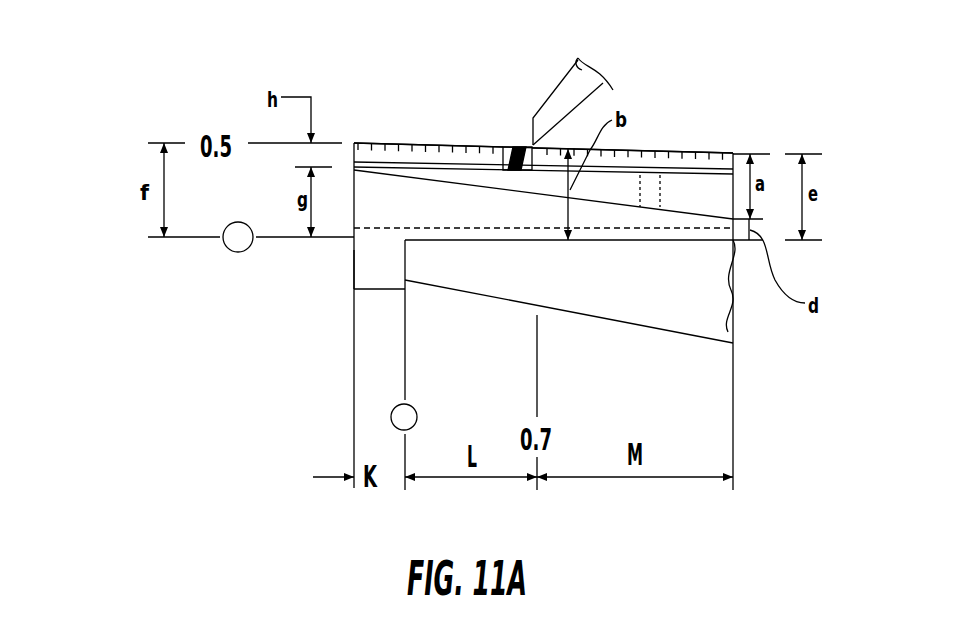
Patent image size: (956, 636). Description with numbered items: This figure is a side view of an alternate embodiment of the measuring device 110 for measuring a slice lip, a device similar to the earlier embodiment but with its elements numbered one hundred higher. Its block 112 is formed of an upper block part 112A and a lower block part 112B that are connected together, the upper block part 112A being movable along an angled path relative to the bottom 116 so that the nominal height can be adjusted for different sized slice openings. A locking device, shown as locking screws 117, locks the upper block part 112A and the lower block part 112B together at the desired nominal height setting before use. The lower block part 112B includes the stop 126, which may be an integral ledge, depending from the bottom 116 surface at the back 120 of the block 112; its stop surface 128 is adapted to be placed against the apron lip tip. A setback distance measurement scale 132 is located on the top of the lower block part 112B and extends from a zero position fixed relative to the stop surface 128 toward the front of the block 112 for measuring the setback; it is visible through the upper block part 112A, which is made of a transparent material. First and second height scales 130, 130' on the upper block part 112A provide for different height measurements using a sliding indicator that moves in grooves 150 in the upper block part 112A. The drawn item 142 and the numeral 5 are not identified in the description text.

The measuring device 110 is at (383, 82).
The block 112 is at (352, 250).
The upper block part 112A is at (617, 185).
The lower block part 112B is at (652, 217).
The bottom 116 is at (530, 241).
The locking screws 117 is at (662, 190).
The back 120 is at (353, 270).
The stop 126 is at (385, 290).
The stop surface 128 is at (408, 262).
The first height scale 130 is at (428, 115).
The second height scale 130' is at (632, 117).
The setback distance measurement scale 132 is at (493, 228).
The insert / stop 142 is at (513, 145).
The grooves 150 is at (422, 168).
The apron bottom edge 5 is at (710, 325).